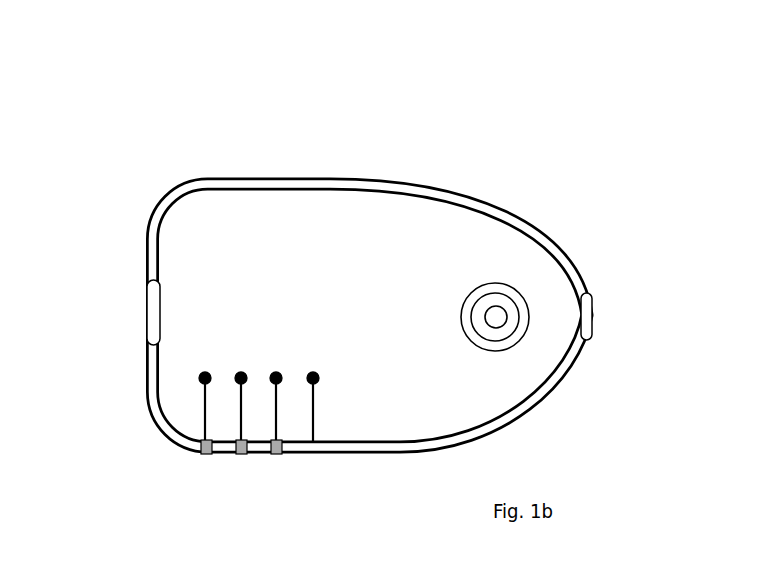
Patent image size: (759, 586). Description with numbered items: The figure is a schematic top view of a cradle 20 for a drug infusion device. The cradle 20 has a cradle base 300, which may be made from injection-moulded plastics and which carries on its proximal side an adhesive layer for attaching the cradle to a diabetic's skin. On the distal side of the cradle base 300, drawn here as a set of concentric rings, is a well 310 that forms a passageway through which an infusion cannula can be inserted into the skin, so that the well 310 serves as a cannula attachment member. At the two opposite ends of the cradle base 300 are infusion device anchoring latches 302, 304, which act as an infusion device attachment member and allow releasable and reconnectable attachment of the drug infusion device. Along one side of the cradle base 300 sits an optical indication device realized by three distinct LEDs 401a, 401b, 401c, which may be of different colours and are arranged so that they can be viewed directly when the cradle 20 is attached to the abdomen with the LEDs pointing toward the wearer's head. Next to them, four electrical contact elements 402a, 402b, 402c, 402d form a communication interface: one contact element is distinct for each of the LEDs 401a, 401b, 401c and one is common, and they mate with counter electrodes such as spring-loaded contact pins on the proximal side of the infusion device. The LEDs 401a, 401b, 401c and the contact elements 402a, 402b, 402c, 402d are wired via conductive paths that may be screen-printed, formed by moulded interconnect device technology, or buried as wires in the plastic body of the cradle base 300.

The cradle 20 is at (246, 117).
The cradle base 300 is at (401, 204).
The infusion device anchoring latch 302 is at (144, 299).
The infusion device anchoring latch 304 is at (598, 308).
The well 310 is at (483, 302).
The electrical contact element 402a is at (219, 366).
The electrical contact element 402b is at (253, 365).
The electrical contact element 402c is at (288, 366).
The electrical contact element 402d is at (326, 365).
The LED 401a is at (195, 461).
The LED 401b is at (242, 467).
The LED 401c is at (287, 462).